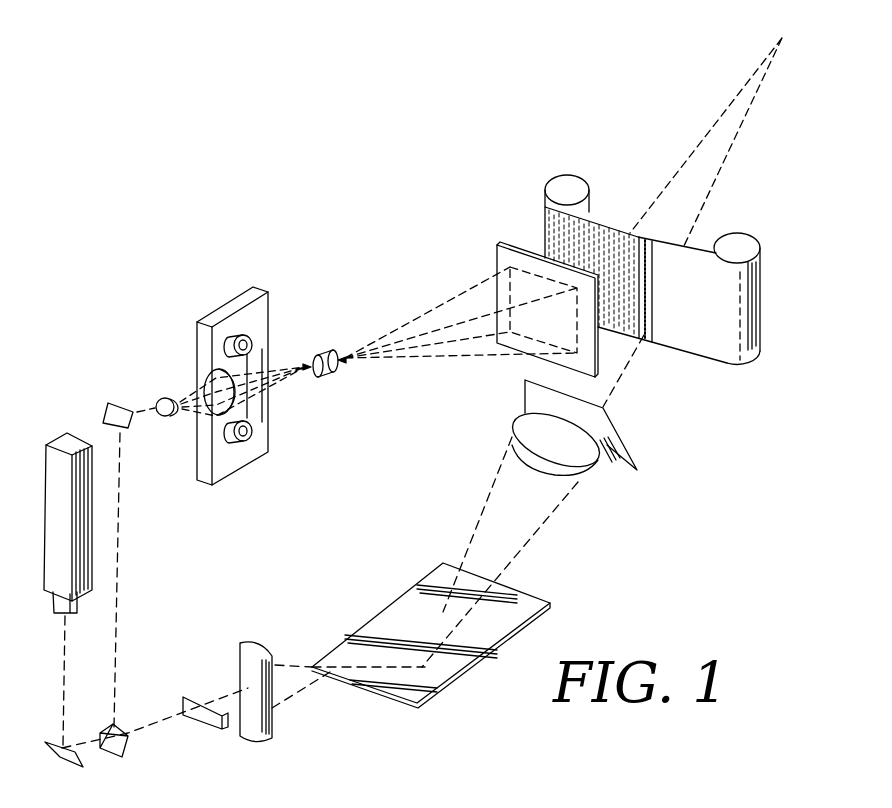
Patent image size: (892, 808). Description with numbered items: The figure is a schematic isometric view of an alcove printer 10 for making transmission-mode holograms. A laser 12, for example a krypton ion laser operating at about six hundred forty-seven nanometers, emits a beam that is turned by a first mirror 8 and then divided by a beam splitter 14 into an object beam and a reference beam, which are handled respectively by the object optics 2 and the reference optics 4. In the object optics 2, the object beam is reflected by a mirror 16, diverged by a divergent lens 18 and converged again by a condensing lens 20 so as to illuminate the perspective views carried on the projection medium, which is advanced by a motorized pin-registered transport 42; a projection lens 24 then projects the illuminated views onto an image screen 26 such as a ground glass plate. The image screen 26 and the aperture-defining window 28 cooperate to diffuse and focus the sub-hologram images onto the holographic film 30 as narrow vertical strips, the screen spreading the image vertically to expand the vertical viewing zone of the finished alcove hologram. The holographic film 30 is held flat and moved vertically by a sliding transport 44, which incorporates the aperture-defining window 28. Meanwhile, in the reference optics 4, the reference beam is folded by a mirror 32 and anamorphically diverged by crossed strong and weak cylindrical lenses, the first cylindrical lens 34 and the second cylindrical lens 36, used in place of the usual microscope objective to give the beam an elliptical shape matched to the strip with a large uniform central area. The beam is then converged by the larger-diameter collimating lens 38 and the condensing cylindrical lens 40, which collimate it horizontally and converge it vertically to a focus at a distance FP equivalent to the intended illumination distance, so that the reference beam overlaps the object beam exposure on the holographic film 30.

The object optics 2 is at (175, 378).
The reference optics 4 is at (452, 500).
The first mirror 8 is at (82, 764).
The alcove printer 10 is at (347, 243).
The laser 12 is at (86, 547).
The beam splitter 14 is at (104, 727).
The mirror 16 is at (107, 408).
The divergent lens 18 is at (157, 398).
The condensing lens 20 is at (206, 383).
The projection lens 24 is at (323, 357).
The image screen 26 is at (497, 263).
The aperture-defining window 28 is at (638, 240).
The holographic film 30 is at (646, 340).
The mirror 32 is at (520, 600).
The first cylindrical lens 34 is at (186, 704).
The second cylindrical lens 36 is at (262, 650).
The collimating lens 38 is at (586, 474).
The condensing cylindrical lens 40 is at (625, 437).
The motorized pin-registered transport 42 is at (244, 306).
The sliding transport 44 is at (754, 300).
The focus distance FP is at (711, 131).